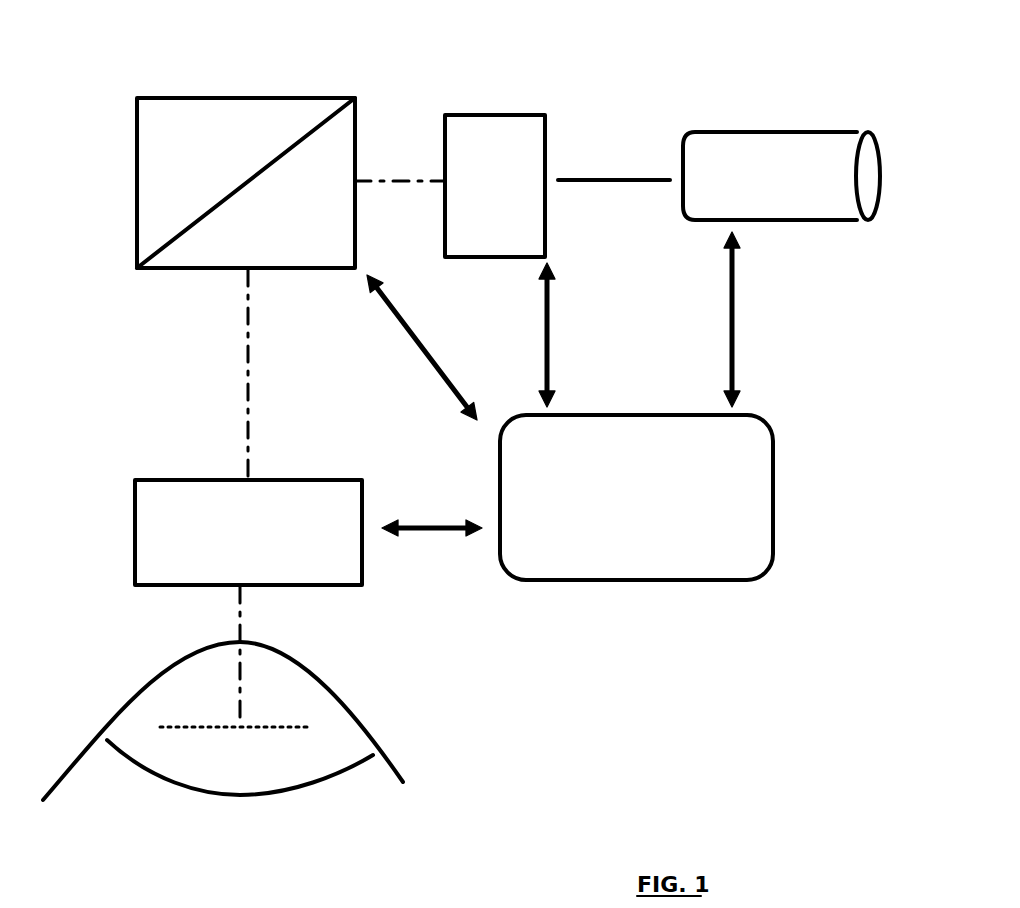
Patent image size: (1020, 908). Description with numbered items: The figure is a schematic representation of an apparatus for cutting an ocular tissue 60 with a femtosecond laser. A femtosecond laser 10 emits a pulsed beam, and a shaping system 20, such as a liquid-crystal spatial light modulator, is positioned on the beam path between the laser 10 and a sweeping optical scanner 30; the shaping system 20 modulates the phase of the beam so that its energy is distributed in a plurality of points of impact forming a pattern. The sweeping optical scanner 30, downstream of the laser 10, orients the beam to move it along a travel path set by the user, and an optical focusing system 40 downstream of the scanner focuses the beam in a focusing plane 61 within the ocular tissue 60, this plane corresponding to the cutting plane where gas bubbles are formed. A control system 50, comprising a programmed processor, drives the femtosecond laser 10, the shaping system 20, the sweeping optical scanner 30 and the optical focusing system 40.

The femtosecond laser 10 is at (775, 160).
The shaping system 20 is at (487, 163).
The sweeping optical scanner 30 is at (212, 170).
The optical focusing system 40 is at (168, 525).
The control system 50 is at (643, 530).
The ocular tissue 60 is at (377, 760).
The focusing plane 61 is at (307, 727).